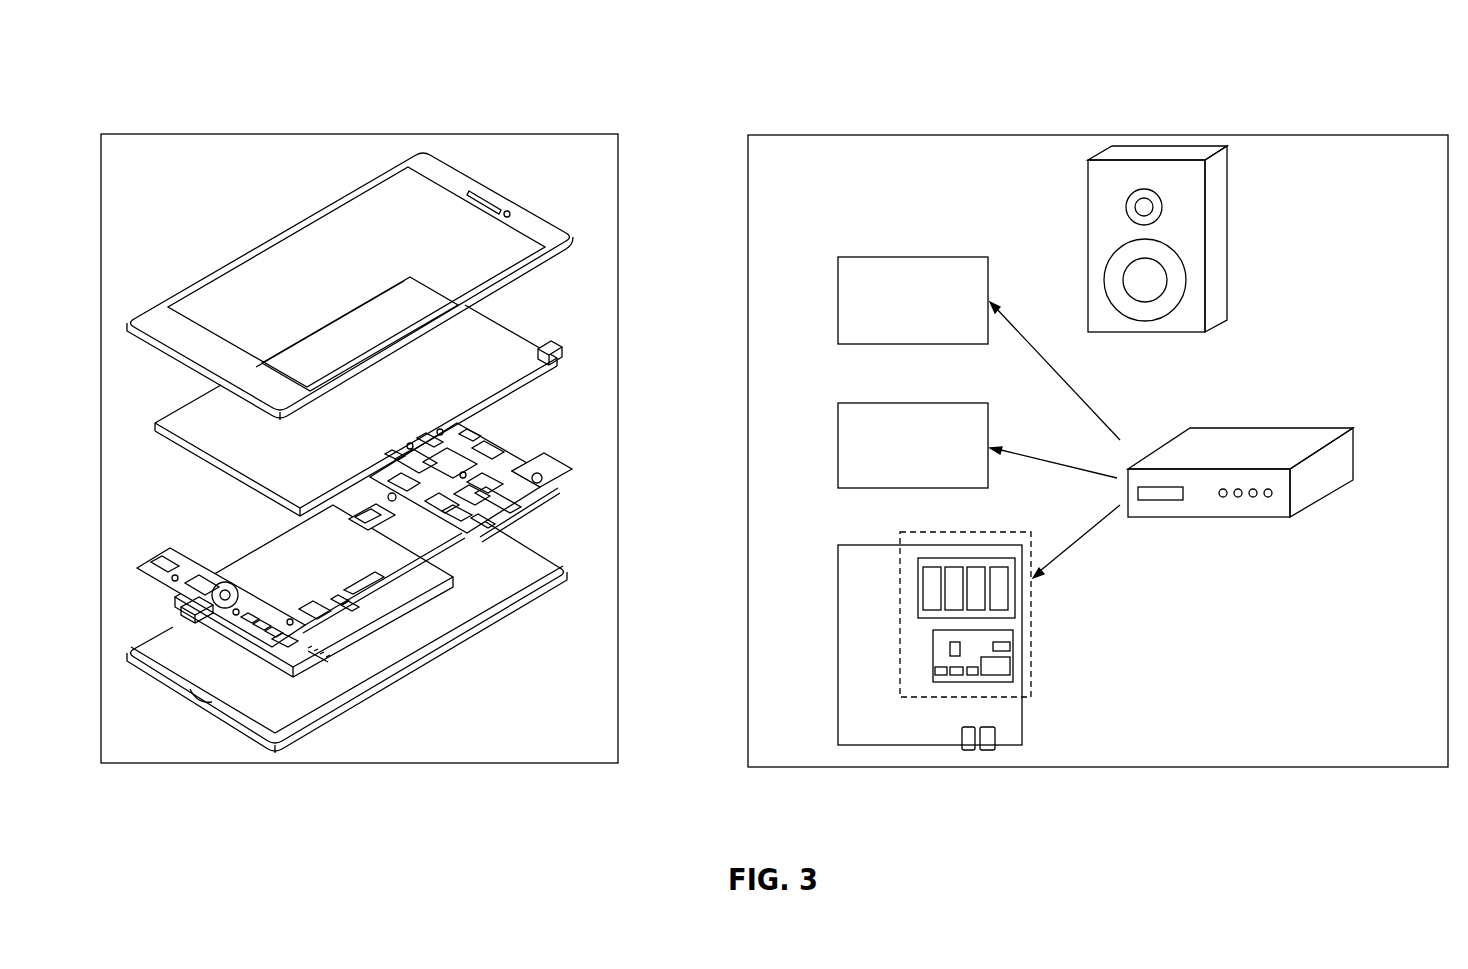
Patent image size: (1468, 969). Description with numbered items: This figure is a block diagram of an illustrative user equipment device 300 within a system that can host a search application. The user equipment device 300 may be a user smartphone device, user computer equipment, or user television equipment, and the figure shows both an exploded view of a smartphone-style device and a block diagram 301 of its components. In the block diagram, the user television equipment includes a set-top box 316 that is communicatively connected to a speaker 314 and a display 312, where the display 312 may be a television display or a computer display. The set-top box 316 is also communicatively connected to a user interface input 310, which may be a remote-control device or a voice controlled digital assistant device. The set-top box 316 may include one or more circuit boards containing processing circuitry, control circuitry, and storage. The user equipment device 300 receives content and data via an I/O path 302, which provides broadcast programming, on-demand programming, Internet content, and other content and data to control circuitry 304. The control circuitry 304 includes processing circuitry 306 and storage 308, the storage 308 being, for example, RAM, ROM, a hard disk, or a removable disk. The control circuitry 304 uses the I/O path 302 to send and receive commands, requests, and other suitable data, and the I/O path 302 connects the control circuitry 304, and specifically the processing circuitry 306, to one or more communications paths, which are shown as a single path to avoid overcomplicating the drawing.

The user equipment device 300 is at (752, 61).
The block diagram of device components 301 is at (1318, 82).
The I/O path 302 is at (202, 598).
The control circuitry 304 is at (512, 518).
The processing circuitry 306 is at (492, 495).
The storage 308 is at (458, 464).
The user interface input 310 is at (472, 334).
The display 312 is at (520, 364).
The speaker 314 is at (483, 190).
The set-top box 316 is at (1275, 428).